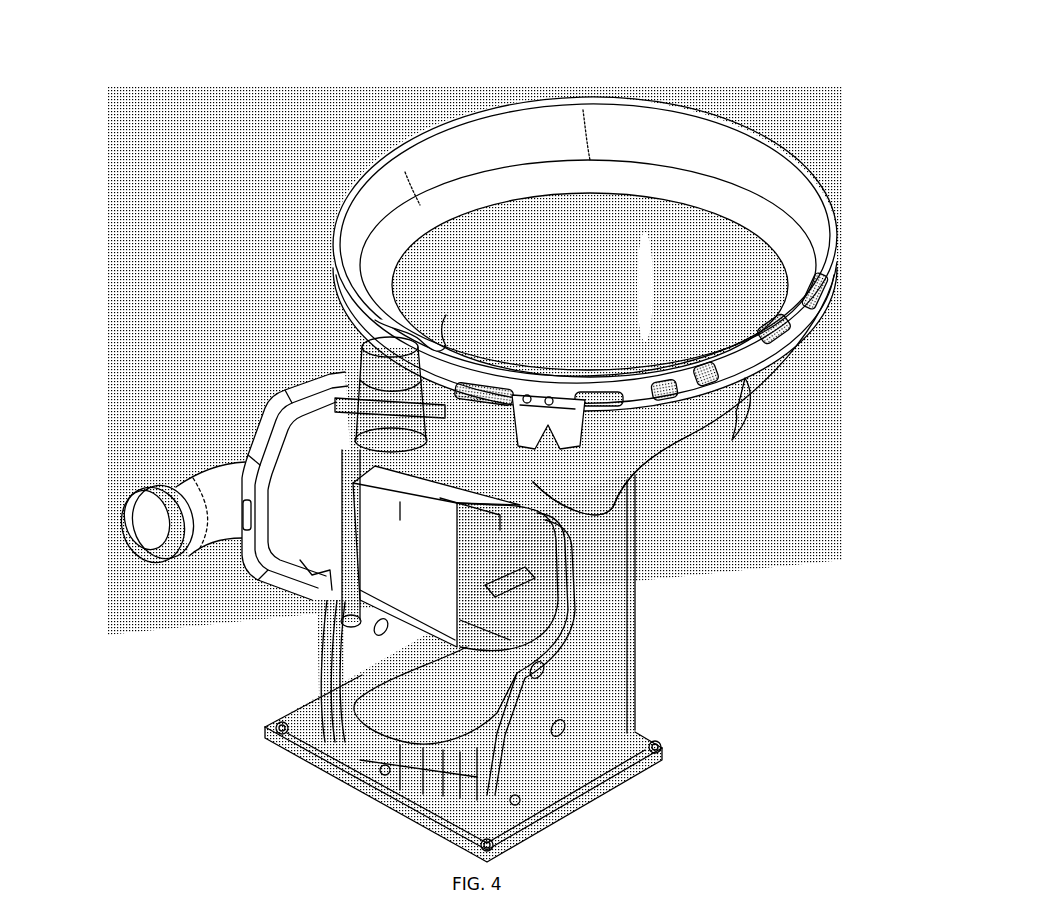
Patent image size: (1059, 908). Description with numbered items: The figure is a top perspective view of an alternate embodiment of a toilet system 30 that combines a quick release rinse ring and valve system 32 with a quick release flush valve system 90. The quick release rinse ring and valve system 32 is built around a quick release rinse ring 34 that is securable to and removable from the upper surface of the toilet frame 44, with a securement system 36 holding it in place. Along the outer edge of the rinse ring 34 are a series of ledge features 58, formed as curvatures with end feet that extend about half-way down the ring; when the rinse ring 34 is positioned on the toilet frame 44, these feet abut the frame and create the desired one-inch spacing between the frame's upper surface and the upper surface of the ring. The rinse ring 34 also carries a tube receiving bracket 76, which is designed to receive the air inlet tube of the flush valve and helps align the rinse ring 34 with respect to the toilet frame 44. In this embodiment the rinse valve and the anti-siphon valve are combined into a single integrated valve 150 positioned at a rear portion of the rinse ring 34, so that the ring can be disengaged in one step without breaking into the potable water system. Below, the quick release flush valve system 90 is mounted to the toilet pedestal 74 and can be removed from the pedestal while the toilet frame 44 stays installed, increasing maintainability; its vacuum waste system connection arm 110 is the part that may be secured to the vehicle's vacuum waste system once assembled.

The toilet system 30 is at (311, 201).
The quick release rinse ring and valve system 32 is at (704, 95).
The quick release rinse ring 34 is at (762, 152).
The securement system 36 is at (704, 423).
The toilet frame 44 is at (640, 465).
The ledge features 58 is at (788, 312).
The toilet pedestal 74 is at (562, 711).
The tube receiving bracket 76 is at (563, 432).
The quick release flush valve system 90 is at (137, 410).
The vacuum waste system connection arm 110 is at (219, 512).
The integrated valve 150 is at (385, 346).